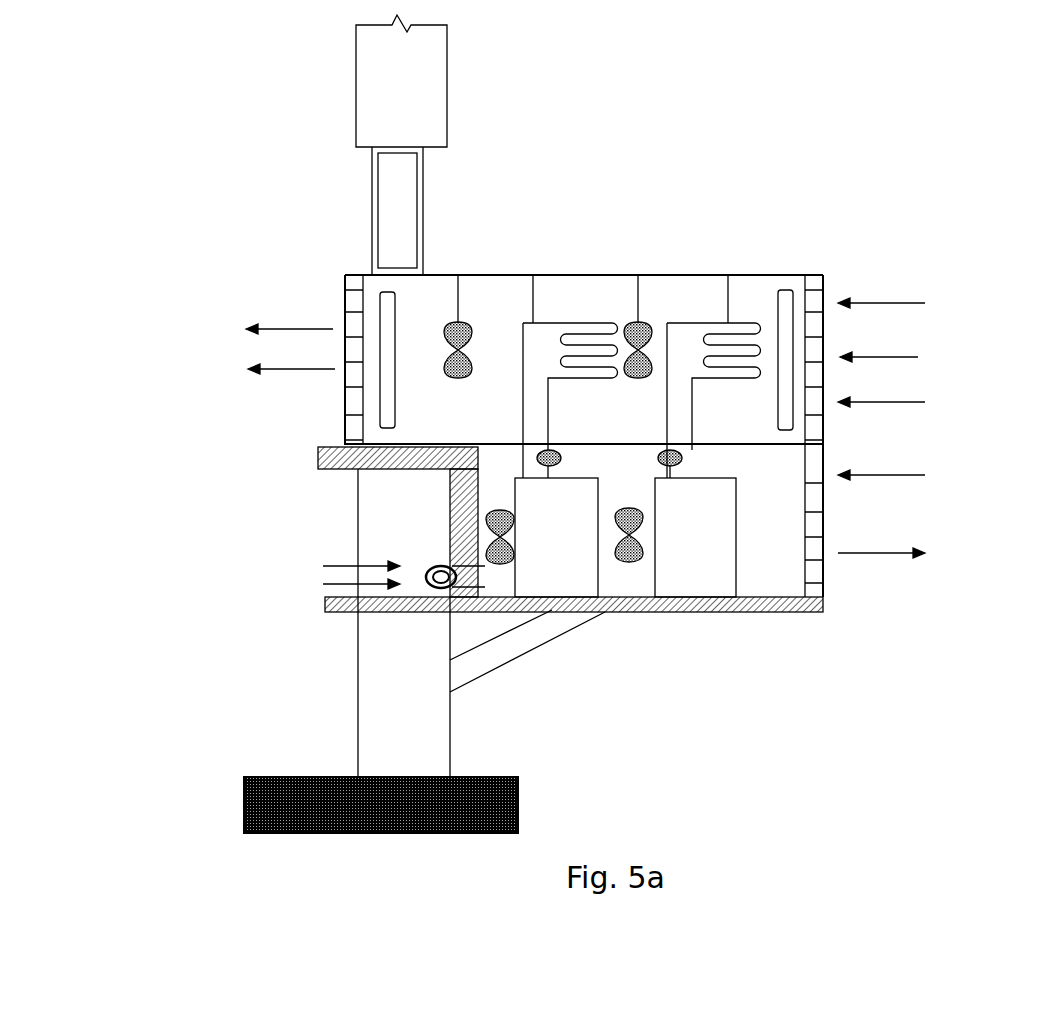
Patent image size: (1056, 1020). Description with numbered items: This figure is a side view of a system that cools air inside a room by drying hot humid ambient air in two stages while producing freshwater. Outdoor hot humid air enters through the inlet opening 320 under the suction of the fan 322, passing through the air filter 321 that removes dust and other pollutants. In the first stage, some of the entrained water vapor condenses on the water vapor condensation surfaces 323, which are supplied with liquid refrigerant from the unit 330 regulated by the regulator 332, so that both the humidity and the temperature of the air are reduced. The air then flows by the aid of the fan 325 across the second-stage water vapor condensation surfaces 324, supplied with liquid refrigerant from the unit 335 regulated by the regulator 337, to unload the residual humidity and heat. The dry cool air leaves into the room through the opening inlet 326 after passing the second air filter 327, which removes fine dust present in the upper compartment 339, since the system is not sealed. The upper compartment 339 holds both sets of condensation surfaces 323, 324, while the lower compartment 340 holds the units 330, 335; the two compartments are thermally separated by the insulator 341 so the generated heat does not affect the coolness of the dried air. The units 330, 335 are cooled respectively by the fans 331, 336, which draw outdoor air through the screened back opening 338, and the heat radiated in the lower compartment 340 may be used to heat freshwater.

The inlet opening 320 is at (812, 296).
The air filter 321 is at (778, 292).
The fan 322 is at (640, 275).
The water vapor condensation surfaces 323 is at (728, 275).
The water vapor condensation surfaces 324 is at (533, 275).
The fan 325 is at (463, 275).
The opening inlet 326 is at (362, 282).
The second air filter 327 is at (386, 311).
The unit 330 is at (736, 501).
The fan 331 is at (637, 556).
The regulator 332 is at (363, 460).
The unit 335 is at (515, 492).
The fan 336 is at (488, 537).
The regulator 337 is at (363, 460).
The screened back opening 338 is at (818, 572).
The upper compartment 339 is at (589, 292).
The lower compartment 340 is at (610, 582).
The insulator 341 is at (823, 443).